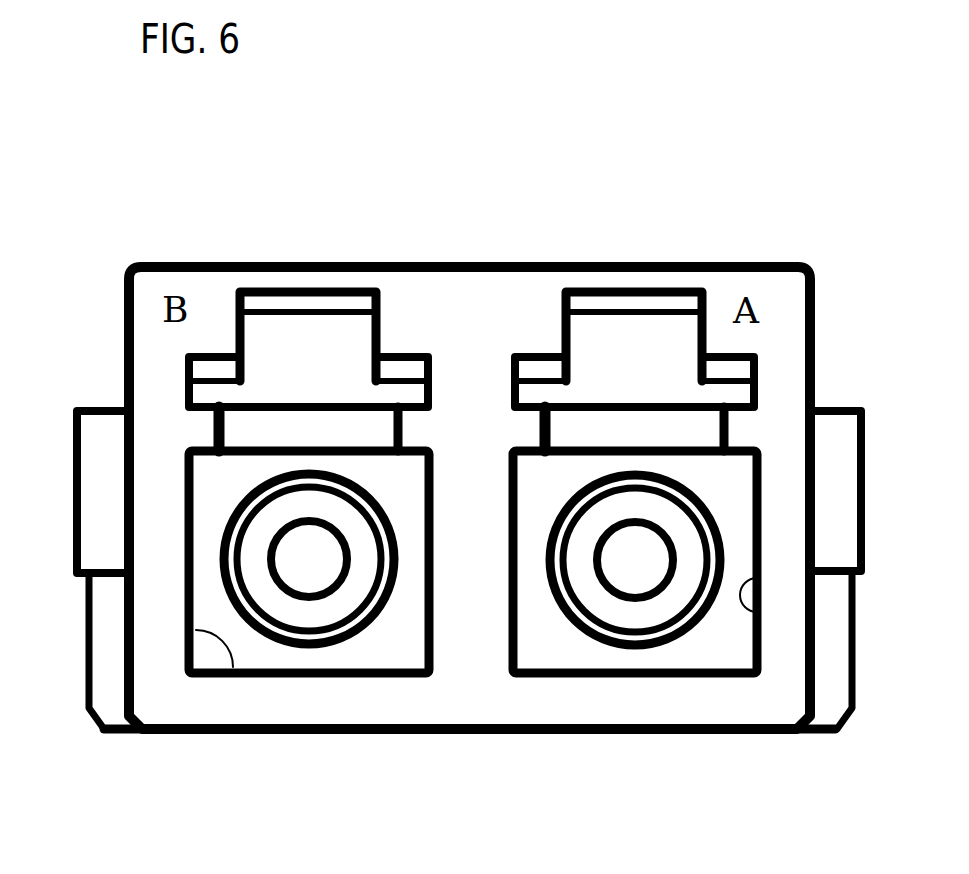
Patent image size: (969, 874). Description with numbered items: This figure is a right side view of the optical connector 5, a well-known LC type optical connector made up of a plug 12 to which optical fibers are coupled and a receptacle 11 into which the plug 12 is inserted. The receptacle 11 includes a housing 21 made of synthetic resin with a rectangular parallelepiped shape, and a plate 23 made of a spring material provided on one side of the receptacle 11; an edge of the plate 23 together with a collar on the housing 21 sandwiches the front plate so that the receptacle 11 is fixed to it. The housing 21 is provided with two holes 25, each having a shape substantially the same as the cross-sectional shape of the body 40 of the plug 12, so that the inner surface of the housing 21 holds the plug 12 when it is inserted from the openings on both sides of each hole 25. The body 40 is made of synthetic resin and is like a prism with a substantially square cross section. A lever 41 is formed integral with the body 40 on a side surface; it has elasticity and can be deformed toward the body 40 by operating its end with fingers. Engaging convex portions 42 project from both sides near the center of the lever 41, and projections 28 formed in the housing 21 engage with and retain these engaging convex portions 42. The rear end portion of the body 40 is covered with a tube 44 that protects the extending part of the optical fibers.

The optical connector 5 is at (497, 136).
The receptacle 11 is at (780, 262).
The plug 12 is at (213, 493).
The housing 21 is at (482, 310).
The plate 23 is at (90, 538).
The hole 25 is at (230, 676).
The projection 28 is at (222, 348).
The body 40 is at (380, 650).
The lever 41 is at (263, 343).
The engaging convex portion 42 is at (202, 370).
The tube 44 is at (283, 608).